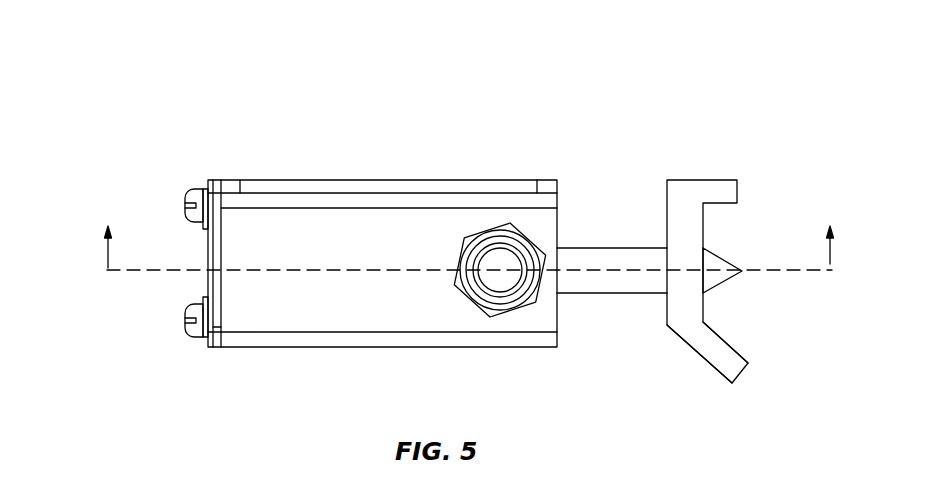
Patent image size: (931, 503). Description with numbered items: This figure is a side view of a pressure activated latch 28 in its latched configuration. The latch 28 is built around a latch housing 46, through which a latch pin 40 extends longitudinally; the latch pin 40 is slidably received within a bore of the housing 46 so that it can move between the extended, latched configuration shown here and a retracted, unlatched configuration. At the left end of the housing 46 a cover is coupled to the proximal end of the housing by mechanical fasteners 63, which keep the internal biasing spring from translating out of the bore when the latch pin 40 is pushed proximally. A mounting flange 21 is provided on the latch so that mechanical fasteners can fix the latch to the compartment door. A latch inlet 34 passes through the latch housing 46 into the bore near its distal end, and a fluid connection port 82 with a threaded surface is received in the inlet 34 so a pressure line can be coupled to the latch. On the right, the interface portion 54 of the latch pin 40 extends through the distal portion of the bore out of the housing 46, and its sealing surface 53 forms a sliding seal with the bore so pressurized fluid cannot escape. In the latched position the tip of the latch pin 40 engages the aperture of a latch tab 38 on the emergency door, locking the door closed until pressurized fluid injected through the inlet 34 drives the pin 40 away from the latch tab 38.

The latch 28 is at (573, 52).
The mounting flange 21 is at (355, 188).
The latch housing 46 is at (265, 227).
The mechanical fastener 63 is at (200, 187).
The fluid connection port 82 is at (473, 232).
The latch inlet 34 is at (534, 235).
The sealing surface 53 is at (615, 288).
The interface portion 54 is at (649, 303).
The latch pin 40 is at (626, 211).
The latch tab 38 is at (685, 225).